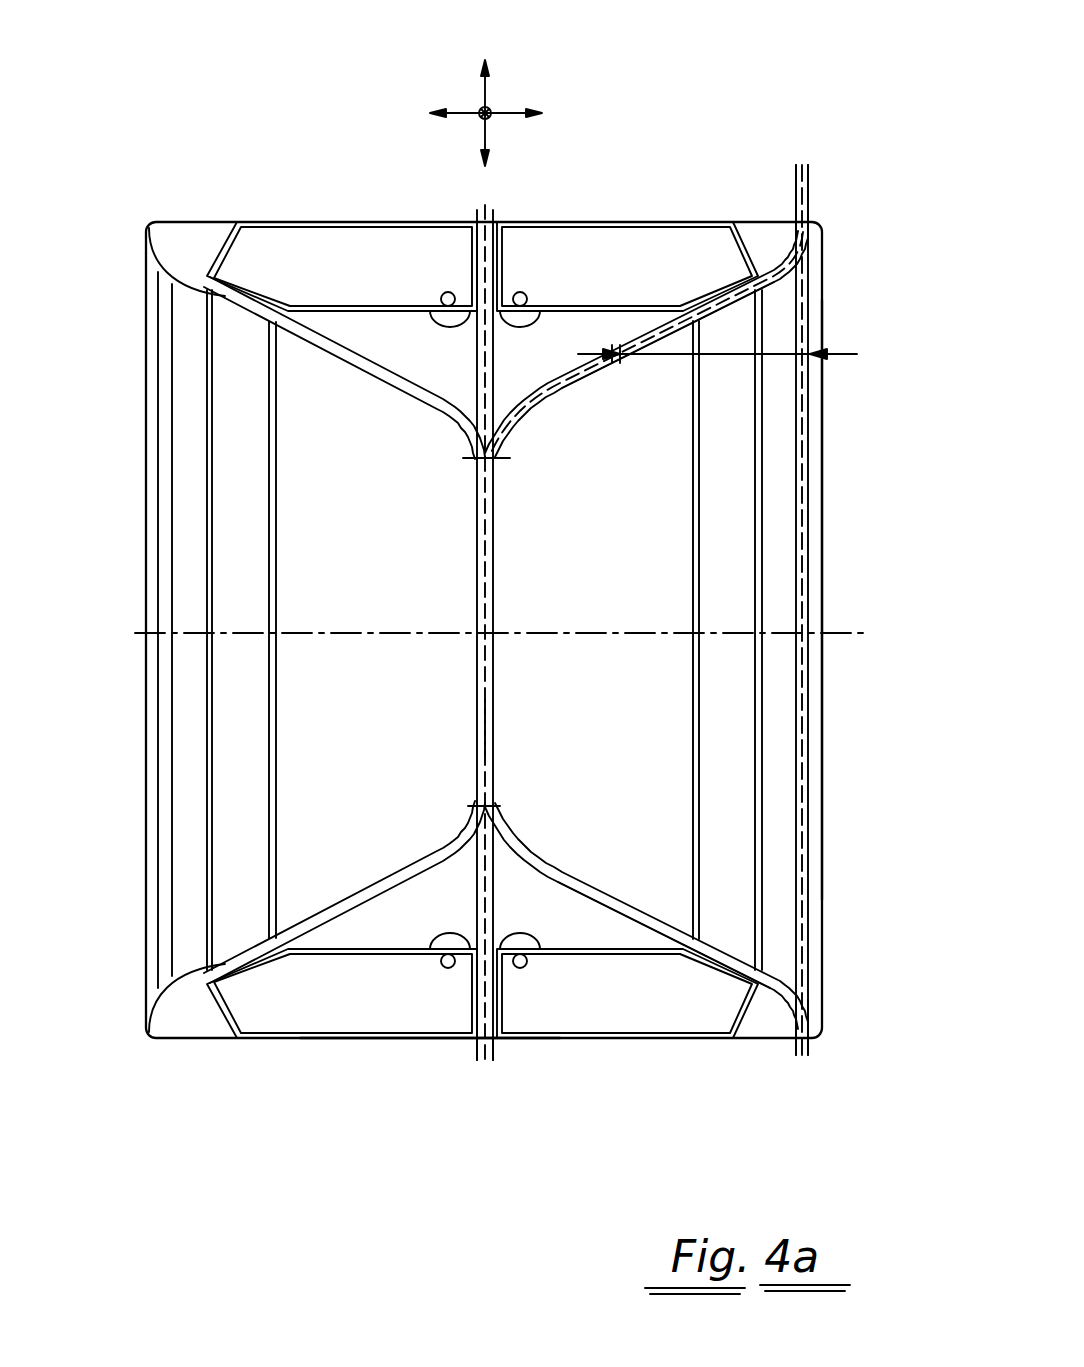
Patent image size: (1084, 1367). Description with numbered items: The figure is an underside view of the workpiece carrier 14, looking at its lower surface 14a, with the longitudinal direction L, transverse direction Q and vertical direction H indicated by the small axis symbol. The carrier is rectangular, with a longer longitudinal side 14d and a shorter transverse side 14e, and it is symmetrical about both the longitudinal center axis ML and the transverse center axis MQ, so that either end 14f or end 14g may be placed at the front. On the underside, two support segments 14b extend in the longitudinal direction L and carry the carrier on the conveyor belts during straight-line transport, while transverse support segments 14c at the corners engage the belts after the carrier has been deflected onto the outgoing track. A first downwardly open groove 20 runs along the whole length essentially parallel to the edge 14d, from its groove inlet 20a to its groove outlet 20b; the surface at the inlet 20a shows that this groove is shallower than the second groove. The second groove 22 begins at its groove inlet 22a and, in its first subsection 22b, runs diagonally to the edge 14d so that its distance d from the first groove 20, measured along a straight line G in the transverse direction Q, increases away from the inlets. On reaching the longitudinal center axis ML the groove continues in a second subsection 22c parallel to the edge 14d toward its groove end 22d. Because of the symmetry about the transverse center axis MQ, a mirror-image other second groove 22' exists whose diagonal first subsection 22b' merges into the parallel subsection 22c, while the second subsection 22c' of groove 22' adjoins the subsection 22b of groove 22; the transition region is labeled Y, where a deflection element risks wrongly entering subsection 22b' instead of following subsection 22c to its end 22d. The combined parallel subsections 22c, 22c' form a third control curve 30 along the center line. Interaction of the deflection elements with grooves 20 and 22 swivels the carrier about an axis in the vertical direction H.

The workpiece carrier 14 is at (138, 160).
The lower surface 14a is at (385, 492).
The support segments 14b is at (735, 585).
The transverse support segments 14c is at (300, 255).
The longitudinal side 14d is at (822, 420).
The transverse side 14e is at (297, 1043).
The back end 14f is at (428, 1043).
The end 14g is at (205, 222).
The first groove 20 is at (800, 488).
The groove inlet 20a is at (808, 272).
The groove outlet 20b is at (807, 1000).
The second groove 22 is at (646, 314).
The groove inlet 22a is at (772, 300).
The first subsection 22b is at (668, 241).
The first subsection of the other second groove 22b' is at (646, 914).
The other second groove 22' is at (671, 994).
The second subsection 22c is at (344, 630).
The second subsection of the other second groove 22c' is at (483, 635).
The groove end 22d is at (488, 1045).
The third control curve 30 is at (477, 222).
The longitudinal center axis ML is at (478, 722).
The transverse center axis MQ is at (240, 634).
The transition region Y is at (492, 462).
The straight line G is at (732, 357).
The distance d is at (717, 357).
The longitudinal direction L is at (490, 70).
The transverse direction Q is at (535, 110).
The vertical direction H is at (480, 120).